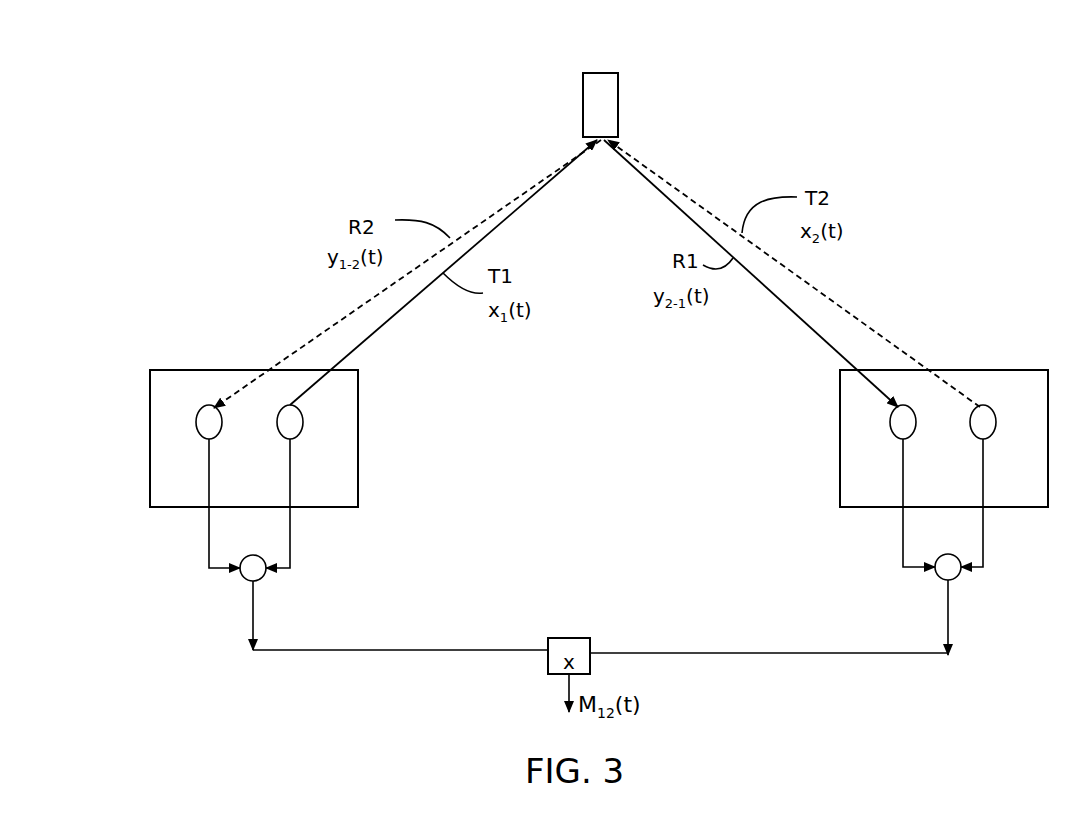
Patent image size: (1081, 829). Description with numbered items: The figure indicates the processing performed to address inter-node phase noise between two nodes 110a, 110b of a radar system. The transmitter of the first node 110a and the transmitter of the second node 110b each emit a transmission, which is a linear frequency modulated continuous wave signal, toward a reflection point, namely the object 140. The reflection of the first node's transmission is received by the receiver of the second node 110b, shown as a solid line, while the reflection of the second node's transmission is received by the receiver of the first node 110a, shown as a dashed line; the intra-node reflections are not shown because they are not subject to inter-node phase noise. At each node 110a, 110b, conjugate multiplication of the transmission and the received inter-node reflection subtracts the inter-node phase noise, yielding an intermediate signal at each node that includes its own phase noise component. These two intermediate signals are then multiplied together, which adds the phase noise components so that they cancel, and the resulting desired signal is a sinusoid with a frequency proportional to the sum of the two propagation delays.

The object 140 is at (618, 100).
The node 110a is at (165, 507).
The node 110b is at (855, 507).